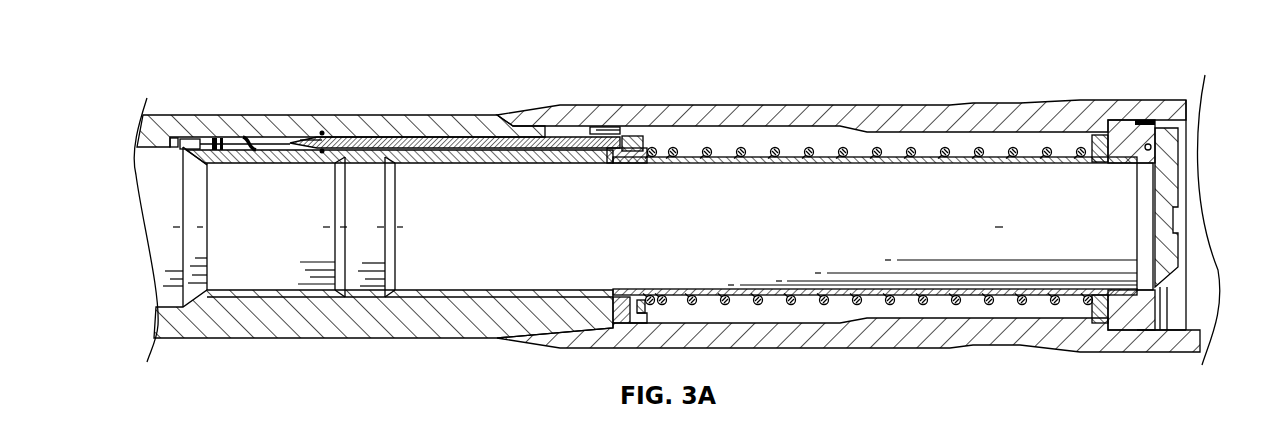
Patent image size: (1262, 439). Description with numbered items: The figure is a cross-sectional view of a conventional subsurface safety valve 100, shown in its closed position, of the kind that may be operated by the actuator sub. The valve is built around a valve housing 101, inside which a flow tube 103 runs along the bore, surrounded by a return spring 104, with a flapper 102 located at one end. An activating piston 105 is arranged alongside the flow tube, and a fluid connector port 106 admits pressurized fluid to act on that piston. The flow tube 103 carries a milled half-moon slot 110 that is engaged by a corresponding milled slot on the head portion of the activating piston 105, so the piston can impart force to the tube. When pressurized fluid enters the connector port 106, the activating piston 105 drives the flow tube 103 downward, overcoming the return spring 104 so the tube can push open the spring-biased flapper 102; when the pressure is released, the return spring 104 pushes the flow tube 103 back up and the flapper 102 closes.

The subsurface safety valve 100 is at (957, 46).
The valve housing 101 is at (857, 93).
The flapper 102 is at (1160, 128).
The flow tube 103 is at (770, 195).
The return spring 104 is at (742, 148).
The activating piston 105 is at (445, 135).
The fluid connector port 106 is at (258, 137).
The milled half-moon slot 110 is at (630, 134).